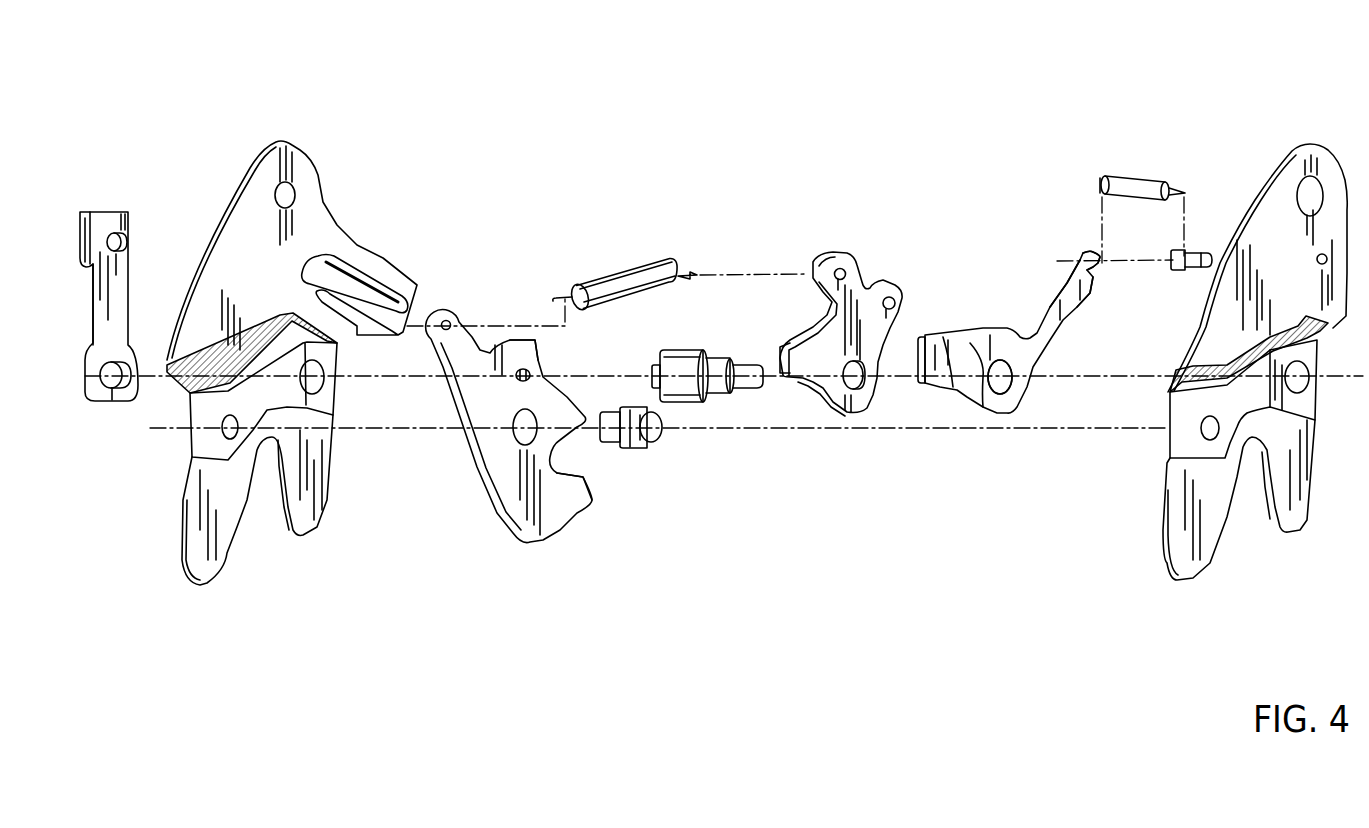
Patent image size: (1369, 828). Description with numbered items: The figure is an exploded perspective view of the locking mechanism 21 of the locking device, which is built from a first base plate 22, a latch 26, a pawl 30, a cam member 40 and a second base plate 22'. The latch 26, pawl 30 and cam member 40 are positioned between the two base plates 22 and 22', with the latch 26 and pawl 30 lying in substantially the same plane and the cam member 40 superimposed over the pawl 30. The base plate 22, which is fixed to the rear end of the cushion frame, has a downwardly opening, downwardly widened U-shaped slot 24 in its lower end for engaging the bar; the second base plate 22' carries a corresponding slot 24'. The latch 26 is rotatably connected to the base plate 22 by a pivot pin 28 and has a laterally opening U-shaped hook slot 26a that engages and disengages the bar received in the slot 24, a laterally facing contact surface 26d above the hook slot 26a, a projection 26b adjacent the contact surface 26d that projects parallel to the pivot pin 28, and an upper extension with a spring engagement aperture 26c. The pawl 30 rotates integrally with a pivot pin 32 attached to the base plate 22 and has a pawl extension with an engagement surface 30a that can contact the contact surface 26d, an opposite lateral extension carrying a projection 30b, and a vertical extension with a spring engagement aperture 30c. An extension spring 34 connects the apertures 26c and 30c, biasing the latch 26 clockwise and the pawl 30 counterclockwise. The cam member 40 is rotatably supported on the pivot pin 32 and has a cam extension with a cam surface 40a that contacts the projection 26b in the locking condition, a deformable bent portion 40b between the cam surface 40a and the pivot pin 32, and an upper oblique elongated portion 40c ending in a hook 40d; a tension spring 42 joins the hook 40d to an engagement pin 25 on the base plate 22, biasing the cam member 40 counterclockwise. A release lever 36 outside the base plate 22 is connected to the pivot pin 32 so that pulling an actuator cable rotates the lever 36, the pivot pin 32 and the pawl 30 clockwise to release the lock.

The locking mechanism 21 is at (686, 113).
The first base plate 22 is at (290, 247).
The second base plate 22' is at (1257, 252).
The U-shaped slot 24 is at (252, 452).
The support plate 24' is at (1245, 450).
The engagement pin 25 is at (1185, 275).
The latch 26 is at (500, 468).
The hook slot 26a is at (580, 463).
The projection 26b is at (517, 372).
The spring engagement aperture 26c is at (447, 320).
The contact surface 26d is at (540, 353).
The pivot pin 28 is at (647, 433).
The pawl 30 is at (867, 333).
The engagement surface 30a is at (773, 352).
The projection 30b is at (897, 283).
The spring engagement aperture 30c is at (840, 252).
The pivot pin 32 is at (690, 400).
The extension spring 34 is at (615, 285).
The release lever 36 is at (119, 301).
The cam member 40 is at (1000, 337).
The cam surface 40a is at (917, 360).
The bent portion 40b is at (980, 400).
The elongated portion 40c is at (1063, 303).
The hook 40d is at (1080, 253).
The tension spring 42 is at (1136, 182).